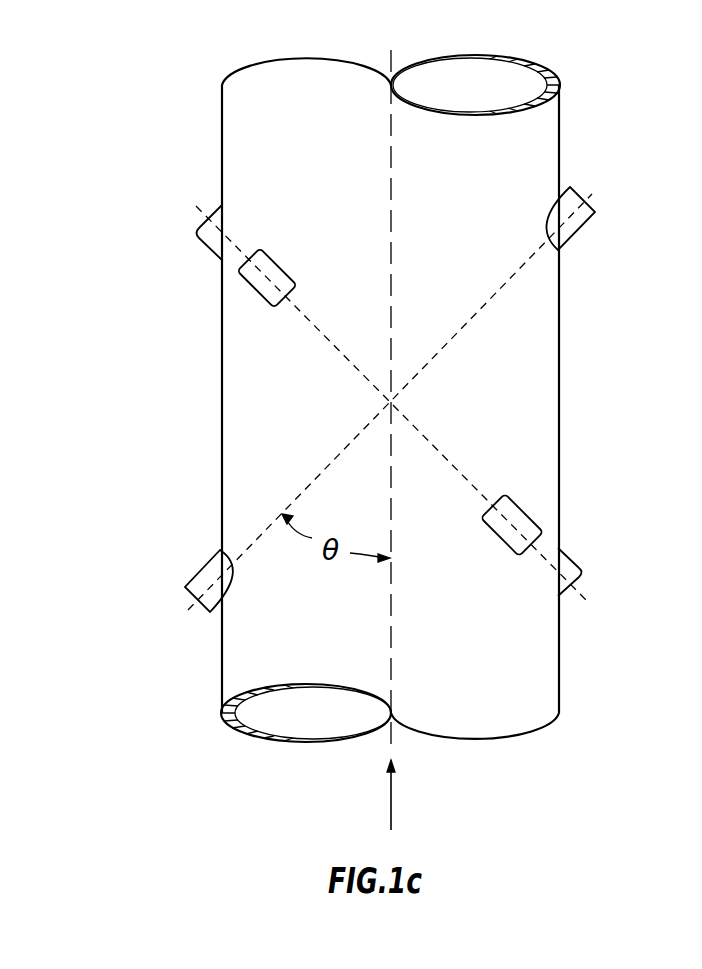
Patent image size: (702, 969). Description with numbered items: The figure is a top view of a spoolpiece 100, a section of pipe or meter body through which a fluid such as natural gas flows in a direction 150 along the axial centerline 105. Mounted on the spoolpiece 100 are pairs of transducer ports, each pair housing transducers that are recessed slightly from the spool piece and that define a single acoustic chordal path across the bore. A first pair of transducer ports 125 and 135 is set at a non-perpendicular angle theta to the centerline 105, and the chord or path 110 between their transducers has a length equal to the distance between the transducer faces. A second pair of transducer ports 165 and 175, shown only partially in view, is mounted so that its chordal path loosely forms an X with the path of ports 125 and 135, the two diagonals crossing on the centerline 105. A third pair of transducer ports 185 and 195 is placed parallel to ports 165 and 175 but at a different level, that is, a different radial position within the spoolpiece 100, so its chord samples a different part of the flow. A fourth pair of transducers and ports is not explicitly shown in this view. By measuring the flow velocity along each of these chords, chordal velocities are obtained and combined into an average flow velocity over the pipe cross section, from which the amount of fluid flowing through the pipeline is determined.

The spoolpiece 100 is at (560, 102).
The centerline 105 is at (392, 157).
The path 110 is at (441, 352).
The transducer port 125 is at (586, 228).
The transducer port 135 is at (207, 556).
The flow direction 150 is at (391, 805).
The transducer port 165 is at (210, 246).
The transducer port 175 is at (574, 560).
The transducer port 185 is at (274, 252).
The transducer port 195 is at (500, 542).